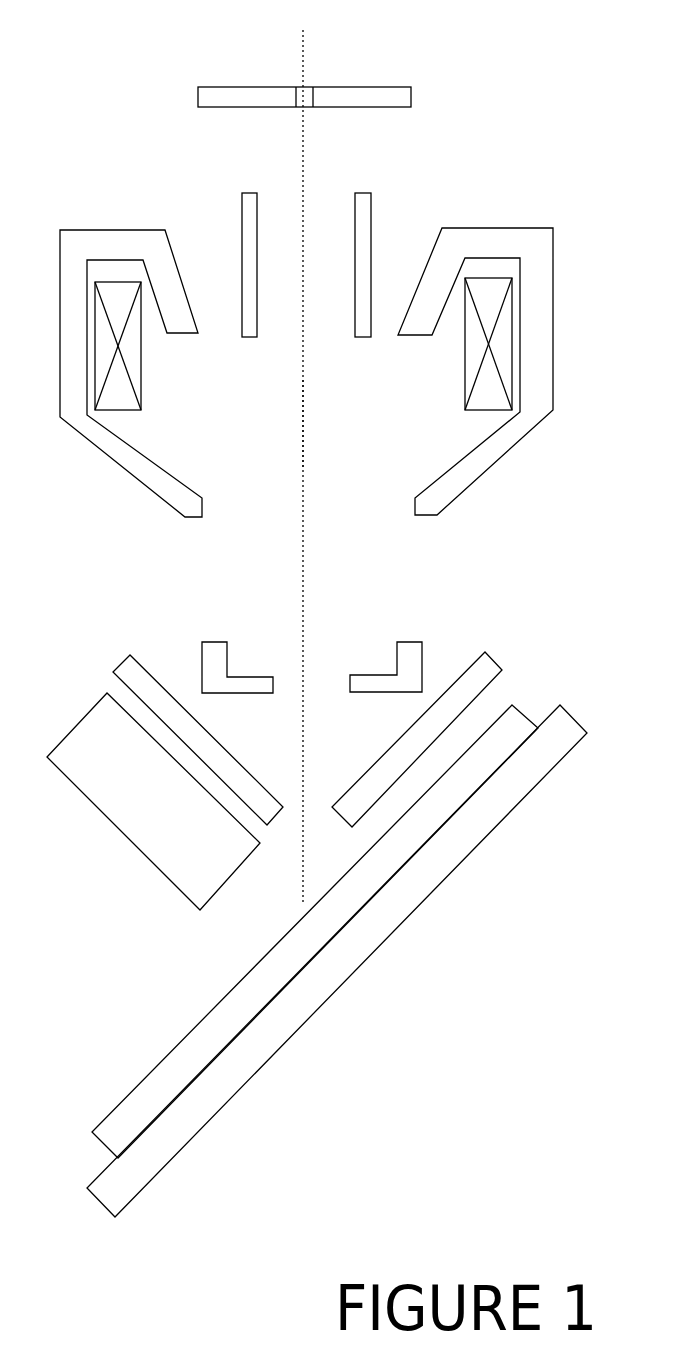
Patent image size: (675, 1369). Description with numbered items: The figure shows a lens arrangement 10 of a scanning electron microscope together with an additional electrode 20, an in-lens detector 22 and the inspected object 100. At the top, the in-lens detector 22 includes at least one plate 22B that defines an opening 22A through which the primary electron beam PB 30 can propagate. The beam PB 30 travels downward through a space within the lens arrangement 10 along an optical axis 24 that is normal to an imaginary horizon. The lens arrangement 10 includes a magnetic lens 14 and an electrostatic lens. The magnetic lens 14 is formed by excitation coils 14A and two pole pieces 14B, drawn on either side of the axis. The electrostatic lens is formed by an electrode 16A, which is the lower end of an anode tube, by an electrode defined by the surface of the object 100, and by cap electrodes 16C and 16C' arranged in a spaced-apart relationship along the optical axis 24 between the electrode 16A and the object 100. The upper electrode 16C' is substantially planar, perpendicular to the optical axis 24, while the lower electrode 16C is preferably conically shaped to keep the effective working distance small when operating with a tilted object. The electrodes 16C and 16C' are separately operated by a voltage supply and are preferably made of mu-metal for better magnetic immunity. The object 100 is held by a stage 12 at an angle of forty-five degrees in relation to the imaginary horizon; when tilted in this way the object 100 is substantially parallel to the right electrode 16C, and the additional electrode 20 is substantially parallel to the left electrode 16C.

The lens arrangement 10 is at (60, 1119).
The stage 12 is at (337, 961).
The magnetic lens 14 is at (337, 372).
The excitation coils 14A is at (142, 344).
The pole pieces 14B is at (306, 372).
The electrode 16A is at (238, 237).
The cap electrode 16C is at (307, 722).
The cap electrode 16C' is at (418, 643).
The additional electrode 20 is at (153, 801).
The in-lens detector 22 is at (337, 80).
The opening 22A is at (310, 86).
The plate 22B is at (247, 97).
The optical axis 24 is at (298, 455).
The primary electron beam PB 30 is at (303, 458).
The object 100 is at (315, 931).